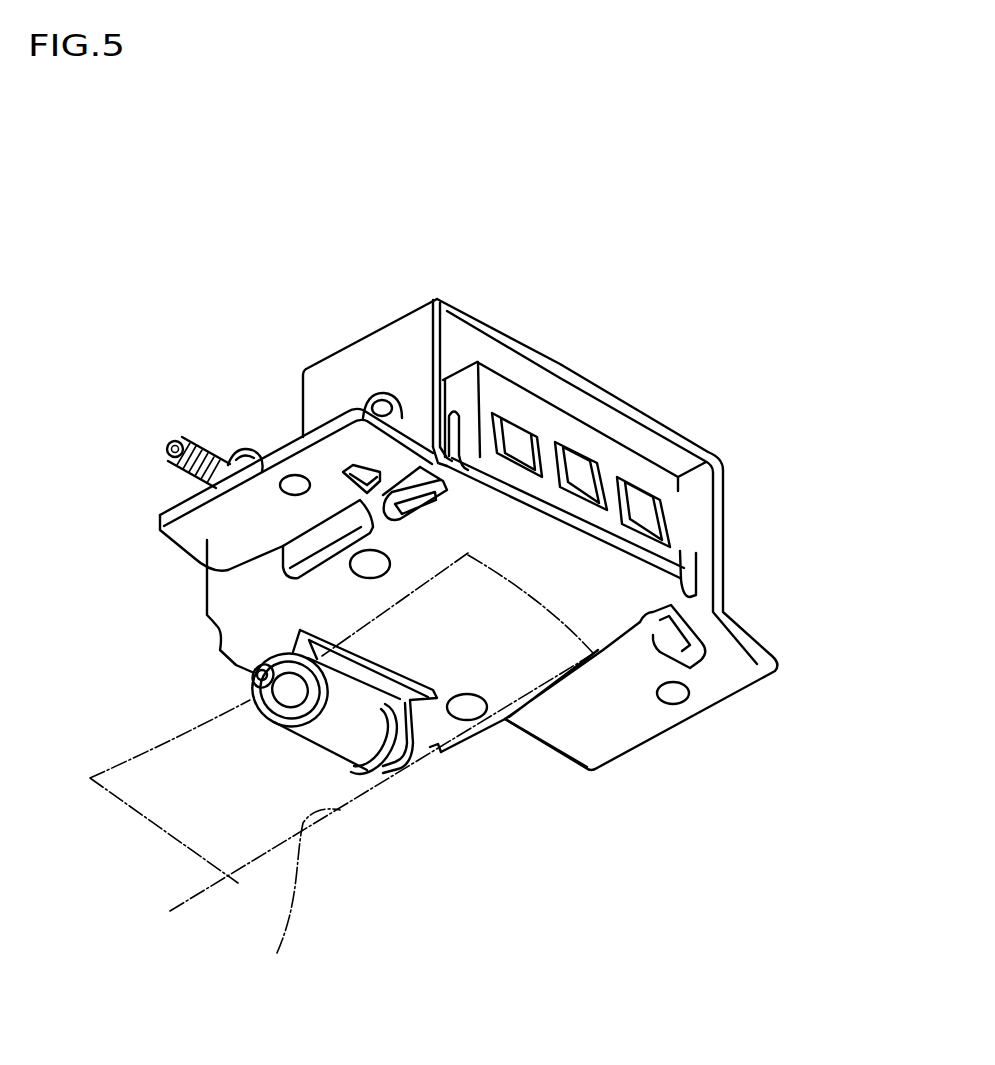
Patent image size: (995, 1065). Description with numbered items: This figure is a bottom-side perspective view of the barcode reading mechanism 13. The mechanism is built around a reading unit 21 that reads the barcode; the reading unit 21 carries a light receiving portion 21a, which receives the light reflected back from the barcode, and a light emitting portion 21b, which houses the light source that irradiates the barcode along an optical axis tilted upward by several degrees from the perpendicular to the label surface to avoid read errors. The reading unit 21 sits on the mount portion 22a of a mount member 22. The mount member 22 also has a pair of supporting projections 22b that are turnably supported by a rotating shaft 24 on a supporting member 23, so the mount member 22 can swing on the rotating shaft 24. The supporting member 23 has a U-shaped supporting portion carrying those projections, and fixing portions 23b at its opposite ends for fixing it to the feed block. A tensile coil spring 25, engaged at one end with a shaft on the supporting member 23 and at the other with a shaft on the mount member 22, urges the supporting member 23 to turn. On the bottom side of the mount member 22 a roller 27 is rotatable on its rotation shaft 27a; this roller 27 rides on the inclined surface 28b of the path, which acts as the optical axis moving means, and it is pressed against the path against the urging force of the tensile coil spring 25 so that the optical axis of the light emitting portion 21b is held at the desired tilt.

The barcode reading mechanism 13 is at (701, 908).
The reading unit 21 is at (573, 428).
The light receiving portion 21a is at (577, 493).
The light emitting portion 21b is at (518, 440).
The mount member 22 is at (497, 653).
The mount portion 22a is at (577, 602).
The supporting projections 22b is at (490, 372).
The supporting member 23 is at (387, 340).
The fixing portions 23b is at (208, 537).
The rotating shaft 24 is at (367, 407).
The tensile coil spring 25 is at (212, 455).
The roller 27 is at (330, 737).
The rotation shaft 27a is at (250, 675).
The inclined surface 28b is at (341, 773).